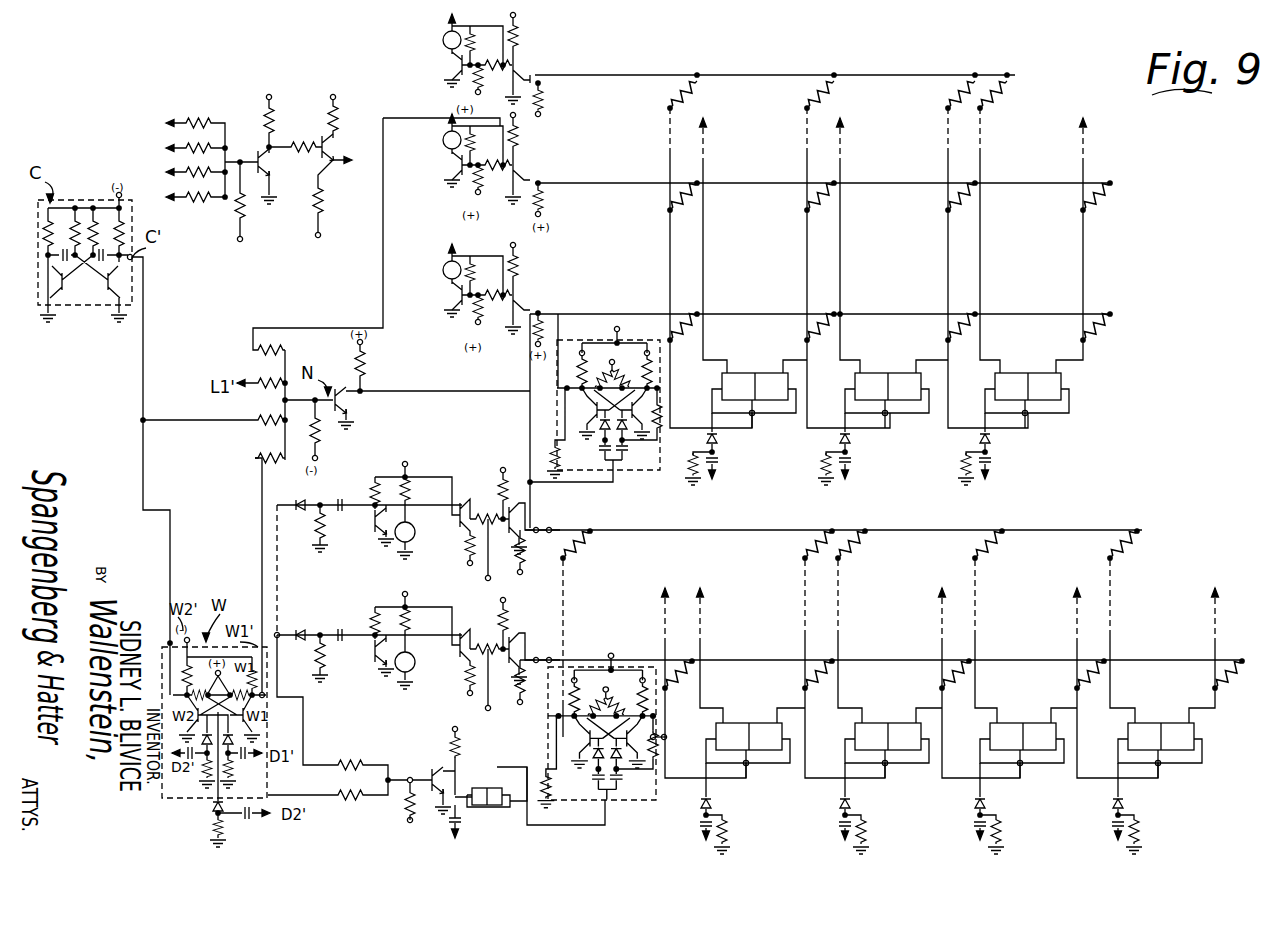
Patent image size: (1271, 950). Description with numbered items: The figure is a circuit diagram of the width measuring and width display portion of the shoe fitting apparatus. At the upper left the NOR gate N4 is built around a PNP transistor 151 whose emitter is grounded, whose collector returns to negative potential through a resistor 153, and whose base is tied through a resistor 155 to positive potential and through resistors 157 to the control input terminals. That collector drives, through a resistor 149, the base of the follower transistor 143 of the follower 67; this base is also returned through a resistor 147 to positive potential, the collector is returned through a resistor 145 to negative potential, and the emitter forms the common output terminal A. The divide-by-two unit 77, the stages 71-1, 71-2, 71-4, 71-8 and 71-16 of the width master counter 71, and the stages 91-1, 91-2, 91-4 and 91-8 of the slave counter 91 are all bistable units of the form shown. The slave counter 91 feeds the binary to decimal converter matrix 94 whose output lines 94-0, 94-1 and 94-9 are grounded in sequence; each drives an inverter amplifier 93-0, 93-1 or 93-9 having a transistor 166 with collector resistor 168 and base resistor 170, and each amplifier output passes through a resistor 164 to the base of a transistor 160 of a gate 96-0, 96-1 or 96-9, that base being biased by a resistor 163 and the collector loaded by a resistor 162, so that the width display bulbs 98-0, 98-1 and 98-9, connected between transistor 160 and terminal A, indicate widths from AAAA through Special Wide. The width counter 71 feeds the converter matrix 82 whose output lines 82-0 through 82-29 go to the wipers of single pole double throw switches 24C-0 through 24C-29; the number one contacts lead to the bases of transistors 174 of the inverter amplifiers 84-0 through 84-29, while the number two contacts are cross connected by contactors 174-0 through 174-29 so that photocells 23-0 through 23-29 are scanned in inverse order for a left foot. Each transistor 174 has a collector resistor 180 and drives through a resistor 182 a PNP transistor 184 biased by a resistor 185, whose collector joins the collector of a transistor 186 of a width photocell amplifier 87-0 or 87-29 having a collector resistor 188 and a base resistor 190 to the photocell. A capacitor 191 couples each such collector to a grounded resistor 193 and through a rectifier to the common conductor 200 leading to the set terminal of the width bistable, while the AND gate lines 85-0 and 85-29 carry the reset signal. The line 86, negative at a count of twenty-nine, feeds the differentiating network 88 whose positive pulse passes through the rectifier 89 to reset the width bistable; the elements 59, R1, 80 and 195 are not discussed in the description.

The NOR gate N4 is at (286, 91).
The follower 67 is at (357, 90).
The resistors 157 is at (203, 122).
The resistor 155 is at (235, 225).
The NOR gate transistor 151 is at (253, 153).
The resistor 153 is at (268, 120).
The resistor 149 is at (300, 150).
The resistor 145 is at (333, 156).
The follower transistor 143 is at (327, 136).
The resistor 147 is at (314, 204).
The width display bulb 98-9 is at (468, 63).
The width display bulb 98-1 is at (445, 170).
The width display bulb 98-0 is at (437, 270).
The resistor 59 is at (489, 47).
The AND gate 96-9 is at (451, 80).
The AND gate 96-1 is at (494, 136).
The AND gate 96-0 is at (494, 266).
The inverter amplifier 93-9 is at (526, 62).
The inverter amplifier 93-1 is at (518, 156).
The inverter amplifier 93-0 is at (508, 281).
The binary to decimal converter matrix 94 is at (866, 232).
The matrix output line 94-9 is at (593, 75).
The matrix output line 94-1 is at (584, 181).
The matrix output line 94-0 is at (584, 313).
The resistor 162 is at (514, 20).
The resistor 168 is at (522, 15).
The resistor 164 is at (540, 86).
The transistor 160 is at (453, 90).
The resistor 163 is at (450, 342).
The transistor 166 is at (508, 350).
The resistor 170 is at (549, 269).
The slave counter 91 is at (808, 412).
The slave counter stage 91-1 is at (610, 344).
The slave counter stage 91-2 is at (745, 370).
The slave counter stage 91-4 is at (885, 370).
The slave counter stage 91-8 is at (1027, 370).
The binary to decimal converter matrix 82 is at (882, 630).
The matrix output line 82-29 is at (628, 534).
The matrix output line 82-0 is at (600, 624).
The contactor 174-29 is at (583, 526).
The contactor 174-0 is at (568, 590).
The transistor 174 is at (524, 512).
The resistor R1 is at (546, 648).
The width master counter 71 is at (863, 742).
The width counter stage 71-1 is at (632, 664).
The width counter stage 71-2 is at (748, 722).
The width counter stage 71-4 is at (890, 722).
The width counter stage 71-8 is at (1025, 722).
The width counter stage 71-16 is at (1165, 722).
The diode 80 is at (560, 829).
The width photocell amplifier 87-29 is at (373, 525).
The width photocell amplifier 87-0 is at (380, 624).
The resistor 193 is at (310, 509).
The capacitor 191 is at (335, 510).
The resistor 190 is at (388, 464).
The resistor 182 is at (430, 539).
The resistor 185 is at (460, 564).
The width photocell 23-29 is at (397, 552).
The width photocell 23-0 is at (426, 690).
The inverter amplifier 84-29 is at (488, 500).
The inverter amplifier 84-0 is at (488, 634).
The output line 85-29 is at (457, 512).
The AND gate output line 85-0 is at (455, 646).
The resistor 180 is at (516, 542).
The line 86 is at (521, 503).
The single pole double throw switch 24C-29 is at (552, 517).
The single pole double throw switch 24C-0 is at (538, 666).
The common conductor 200 is at (278, 612).
The resistor 188 is at (358, 634).
The resistor 195 is at (297, 653).
The transistor 186 is at (380, 664).
The transistor 184 is at (456, 650).
The divide by 2 unit 77 is at (478, 784).
The rectifier 89 is at (210, 806).
The differentiating network 88 is at (238, 819).